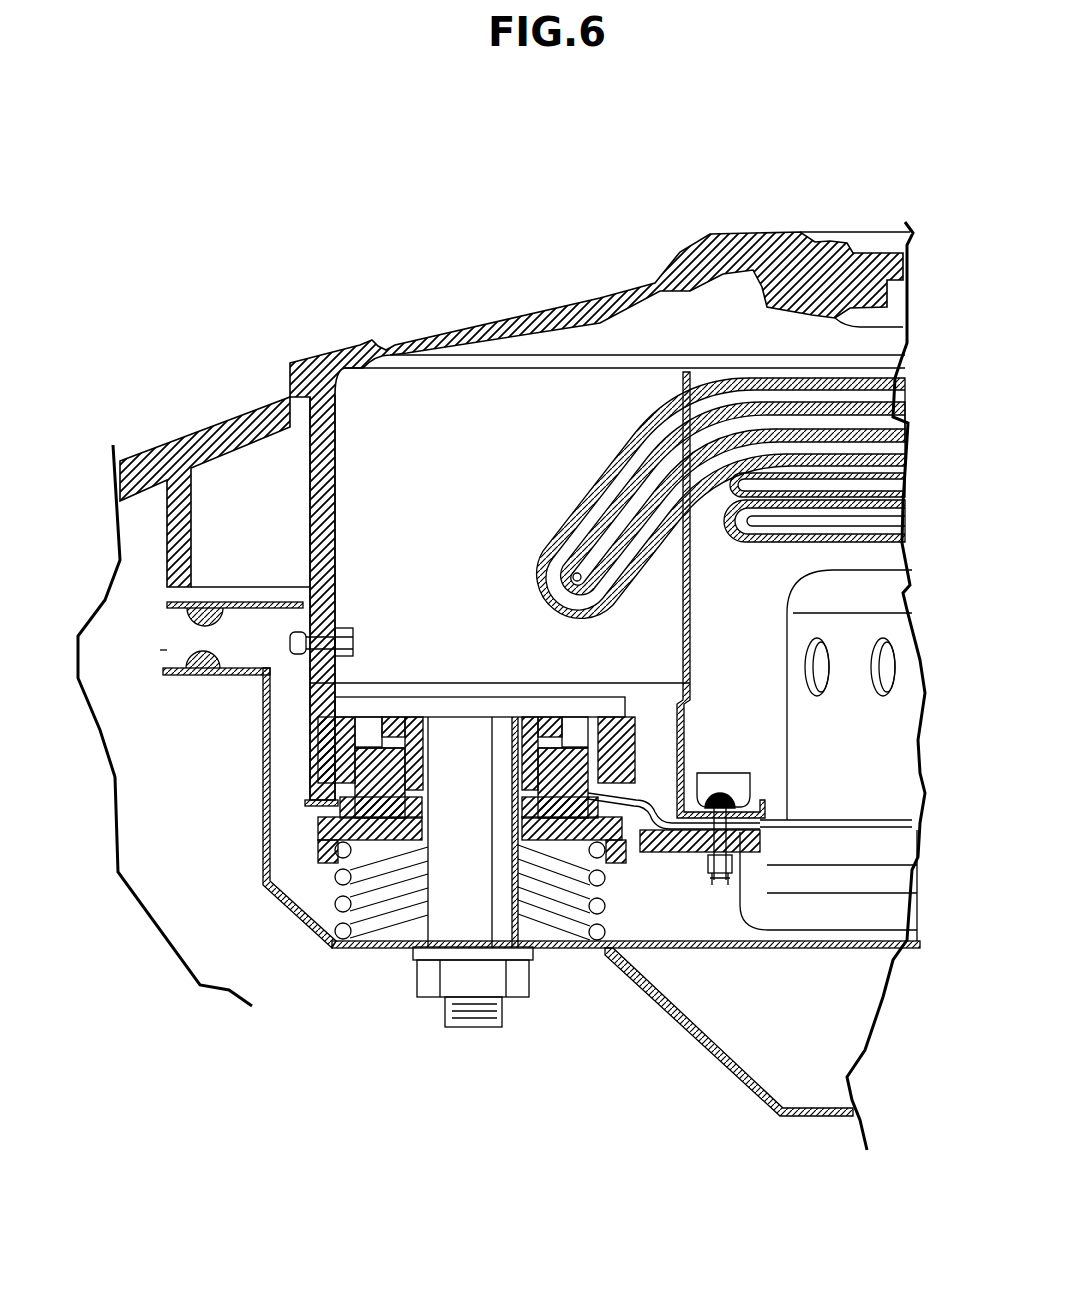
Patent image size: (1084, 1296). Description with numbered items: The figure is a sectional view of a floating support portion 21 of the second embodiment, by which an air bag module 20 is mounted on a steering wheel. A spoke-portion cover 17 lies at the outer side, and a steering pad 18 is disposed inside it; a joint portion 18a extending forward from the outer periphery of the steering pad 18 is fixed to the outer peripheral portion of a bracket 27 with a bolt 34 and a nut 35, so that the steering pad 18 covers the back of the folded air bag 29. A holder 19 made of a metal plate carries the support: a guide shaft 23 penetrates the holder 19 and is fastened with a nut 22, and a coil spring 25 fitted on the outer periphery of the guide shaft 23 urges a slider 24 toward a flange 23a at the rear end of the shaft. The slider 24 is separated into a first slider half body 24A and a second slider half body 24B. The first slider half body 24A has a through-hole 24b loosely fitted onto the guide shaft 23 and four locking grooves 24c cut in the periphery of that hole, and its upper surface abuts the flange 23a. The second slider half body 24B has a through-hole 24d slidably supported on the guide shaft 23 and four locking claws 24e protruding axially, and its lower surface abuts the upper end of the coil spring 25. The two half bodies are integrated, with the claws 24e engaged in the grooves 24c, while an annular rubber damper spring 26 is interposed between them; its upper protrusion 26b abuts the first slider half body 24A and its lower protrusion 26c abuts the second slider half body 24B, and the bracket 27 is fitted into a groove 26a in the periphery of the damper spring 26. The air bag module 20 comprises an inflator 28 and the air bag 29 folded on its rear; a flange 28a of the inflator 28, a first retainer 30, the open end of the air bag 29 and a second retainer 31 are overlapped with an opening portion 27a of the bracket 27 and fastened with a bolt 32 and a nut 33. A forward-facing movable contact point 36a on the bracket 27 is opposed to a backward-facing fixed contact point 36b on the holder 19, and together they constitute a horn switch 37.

The spoke-portion cover 17 is at (222, 415).
The steering pad 18 is at (566, 292).
The joint portion 18a is at (333, 510).
The holder 19 is at (727, 1075).
The air bag module 20 is at (598, 405).
The floating support portion 21 is at (300, 885).
The nut 22 is at (440, 980).
The guide shaft 23 is at (420, 930).
The flange 23a is at (472, 700).
The slider 24 is at (650, 643).
The first slider half body 24A is at (610, 735).
The second slider half body 24B is at (548, 735).
The through-hole 24b is at (402, 745).
The locking groove 24c is at (385, 740).
The through-hole 24d is at (530, 792).
The locking claw 24e is at (555, 740).
The coil spring 25 is at (345, 872).
The damper spring 26 is at (362, 760).
The groove 26a is at (335, 802).
The annular protrusion 26b is at (620, 770).
The annular protrusion 26c is at (625, 850).
The bracket 27 is at (648, 800).
The opening portion 27a is at (775, 835).
The inflator 28 is at (778, 633).
The flange 28a is at (710, 855).
The air bag 29 is at (592, 478).
The first retainer 30 is at (768, 825).
The second retainer 31 is at (748, 800).
The bolt 32 is at (720, 795).
The nut 33 is at (726, 874).
The bolt 34 is at (297, 643).
The nut 35 is at (348, 640).
The movable contact point 36a is at (205, 622).
The fixed contact point 36b is at (185, 662).
The horn switch 37 is at (165, 652).